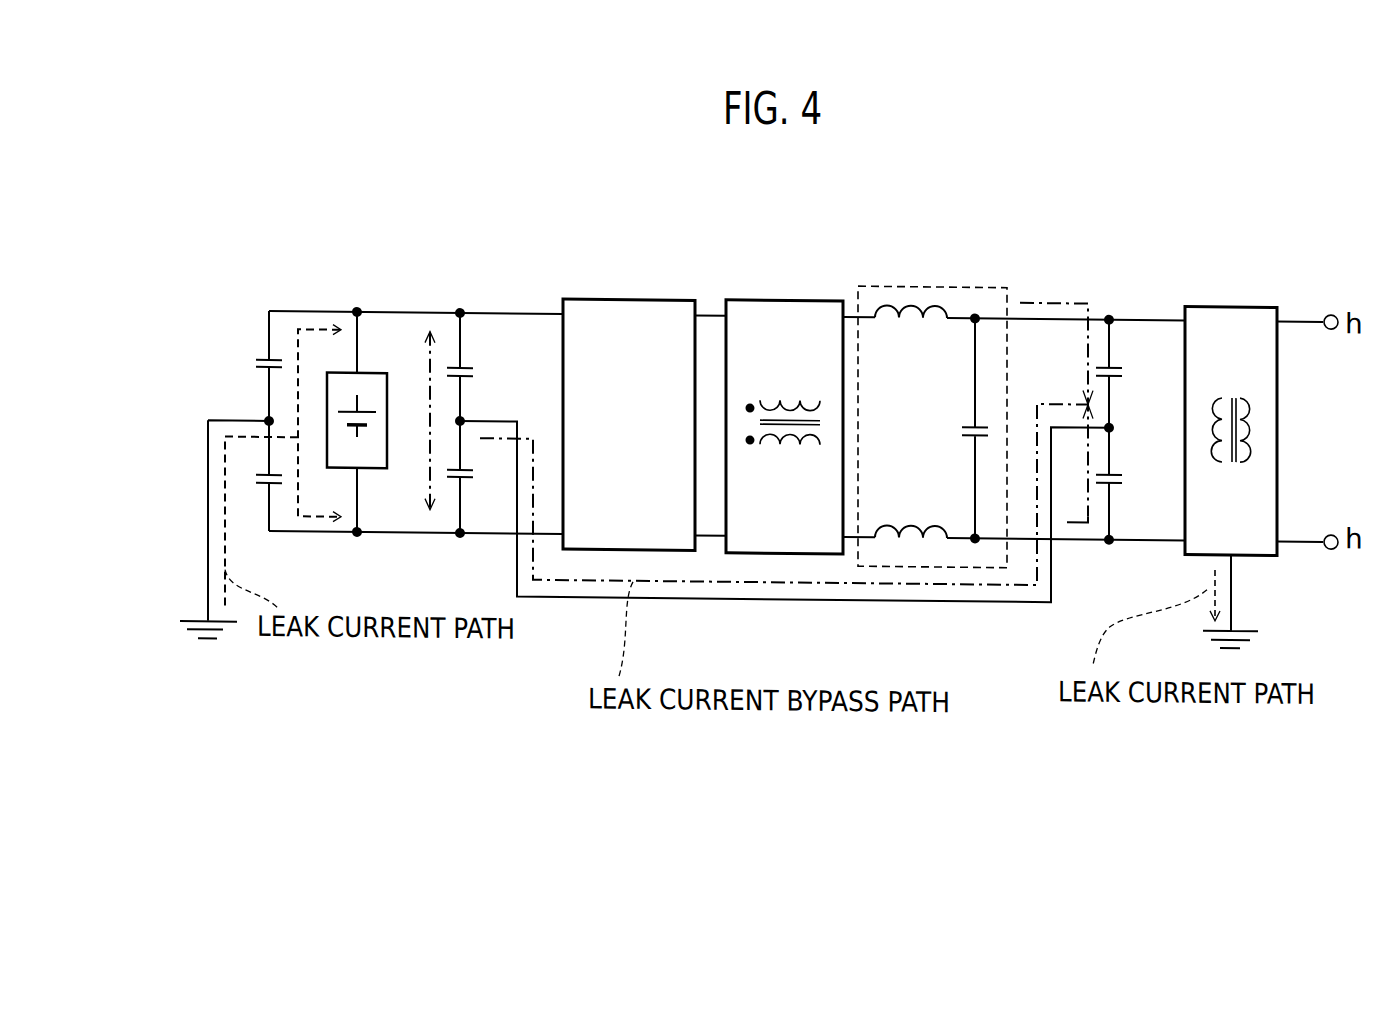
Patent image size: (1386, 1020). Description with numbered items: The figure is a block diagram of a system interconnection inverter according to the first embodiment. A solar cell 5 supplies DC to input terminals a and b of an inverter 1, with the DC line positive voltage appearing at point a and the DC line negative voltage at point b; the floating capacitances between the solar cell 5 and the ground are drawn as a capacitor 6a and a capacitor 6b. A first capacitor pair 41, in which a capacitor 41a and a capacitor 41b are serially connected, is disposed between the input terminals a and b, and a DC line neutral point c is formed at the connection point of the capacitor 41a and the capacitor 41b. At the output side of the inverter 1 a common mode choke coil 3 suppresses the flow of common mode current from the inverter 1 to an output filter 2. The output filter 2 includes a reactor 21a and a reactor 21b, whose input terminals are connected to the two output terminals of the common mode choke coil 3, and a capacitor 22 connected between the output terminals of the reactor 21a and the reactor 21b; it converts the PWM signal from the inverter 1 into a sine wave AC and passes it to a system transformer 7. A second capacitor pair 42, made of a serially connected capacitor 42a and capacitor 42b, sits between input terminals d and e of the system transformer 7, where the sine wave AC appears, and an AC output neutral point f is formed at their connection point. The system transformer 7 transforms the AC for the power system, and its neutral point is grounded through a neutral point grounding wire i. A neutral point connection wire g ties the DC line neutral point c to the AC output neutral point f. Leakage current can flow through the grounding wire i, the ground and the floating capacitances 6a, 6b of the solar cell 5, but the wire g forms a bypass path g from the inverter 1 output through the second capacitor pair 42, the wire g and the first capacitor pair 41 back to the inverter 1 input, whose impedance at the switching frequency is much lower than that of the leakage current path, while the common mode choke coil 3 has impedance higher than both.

The inverter 1 is at (637, 297).
The output filter 2 is at (949, 391).
The common mode choke coil 3 is at (797, 296).
The solar cell 5 is at (371, 373).
The capacitor 6a is at (263, 357).
The capacitor 6b is at (262, 488).
The system transformer 7 is at (1247, 297).
The reactor 21a is at (933, 296).
The reactor 21b is at (915, 512).
The capacitor 22 is at (988, 421).
The first capacitor pair 41 is at (475, 380).
The capacitor 41a is at (469, 364).
The capacitor 41b is at (468, 483).
The second capacitor pair 42 is at (1136, 372).
The capacitor 42a is at (1115, 354).
The capacitor 42b is at (1115, 480).
The input terminal a is at (463, 296).
The input terminal b is at (463, 550).
The DC line neutral point c is at (450, 420).
The input terminal d is at (1111, 303).
The input terminal e is at (1112, 554).
The AC output neutral point f is at (1118, 425).
The neutral point connection wire g is at (784, 464).
The neutral point grounding wire i is at (1227, 592).